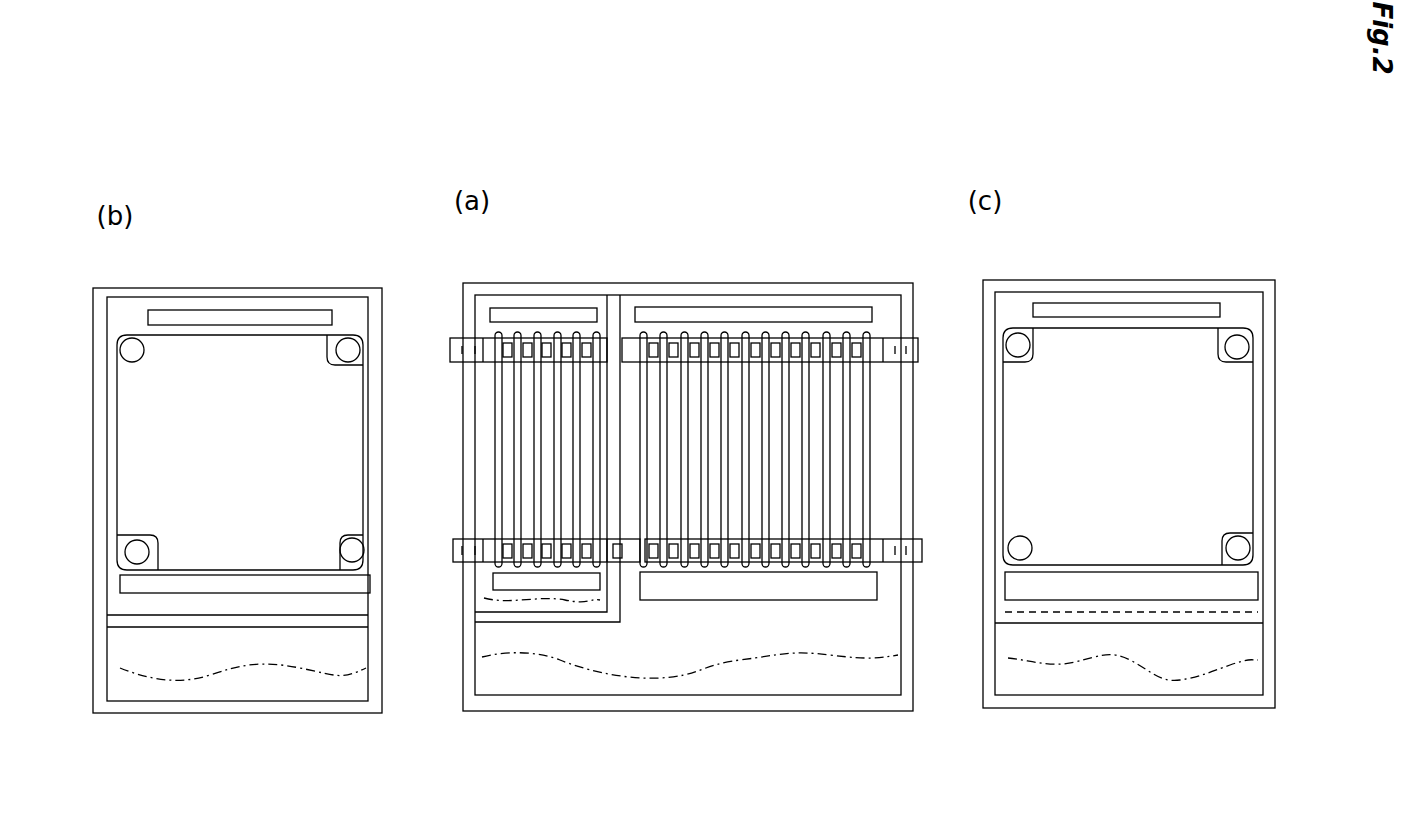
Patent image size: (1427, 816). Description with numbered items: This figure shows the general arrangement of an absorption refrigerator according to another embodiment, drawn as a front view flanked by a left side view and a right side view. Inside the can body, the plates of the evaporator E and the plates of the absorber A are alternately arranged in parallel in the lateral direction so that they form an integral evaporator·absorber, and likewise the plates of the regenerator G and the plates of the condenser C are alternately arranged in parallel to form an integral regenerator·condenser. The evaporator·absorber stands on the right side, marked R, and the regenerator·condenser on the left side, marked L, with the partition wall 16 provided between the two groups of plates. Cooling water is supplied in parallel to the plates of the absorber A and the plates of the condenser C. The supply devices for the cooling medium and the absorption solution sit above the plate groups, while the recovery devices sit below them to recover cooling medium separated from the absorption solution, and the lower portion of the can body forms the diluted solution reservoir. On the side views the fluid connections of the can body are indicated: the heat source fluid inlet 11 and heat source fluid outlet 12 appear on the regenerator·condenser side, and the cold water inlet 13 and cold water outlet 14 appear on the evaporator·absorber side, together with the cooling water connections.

The heat source fluid inlet 11 is at (135, 565).
The heat source fluid outlet 12 is at (348, 347).
The cold water inlet 13 is at (1238, 552).
The cold water outlet 14 is at (1020, 337).
The partition wall 16 is at (622, 307).
The condenser C is at (499, 333).
The regenerator G is at (518, 333).
The absorber A is at (679, 335).
The evaporator E is at (693, 335).
The left frame L is at (518, 450).
The right frame R is at (928, 302).